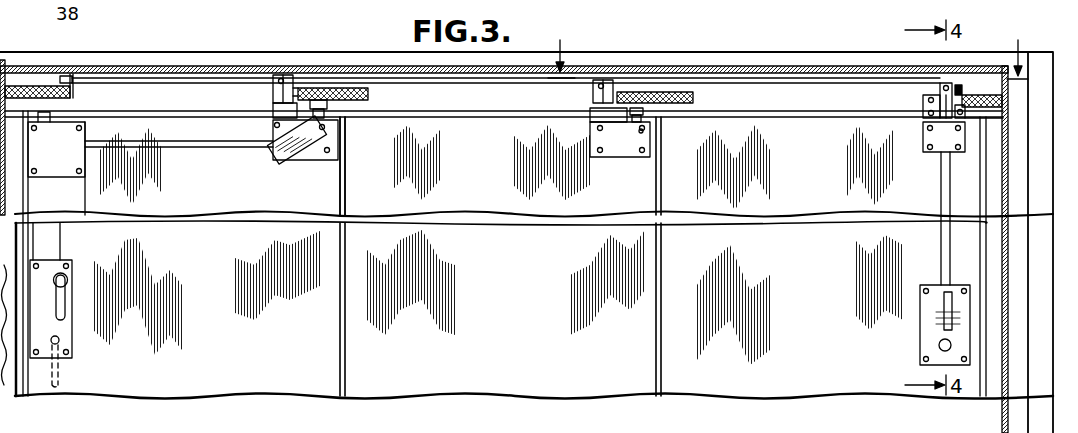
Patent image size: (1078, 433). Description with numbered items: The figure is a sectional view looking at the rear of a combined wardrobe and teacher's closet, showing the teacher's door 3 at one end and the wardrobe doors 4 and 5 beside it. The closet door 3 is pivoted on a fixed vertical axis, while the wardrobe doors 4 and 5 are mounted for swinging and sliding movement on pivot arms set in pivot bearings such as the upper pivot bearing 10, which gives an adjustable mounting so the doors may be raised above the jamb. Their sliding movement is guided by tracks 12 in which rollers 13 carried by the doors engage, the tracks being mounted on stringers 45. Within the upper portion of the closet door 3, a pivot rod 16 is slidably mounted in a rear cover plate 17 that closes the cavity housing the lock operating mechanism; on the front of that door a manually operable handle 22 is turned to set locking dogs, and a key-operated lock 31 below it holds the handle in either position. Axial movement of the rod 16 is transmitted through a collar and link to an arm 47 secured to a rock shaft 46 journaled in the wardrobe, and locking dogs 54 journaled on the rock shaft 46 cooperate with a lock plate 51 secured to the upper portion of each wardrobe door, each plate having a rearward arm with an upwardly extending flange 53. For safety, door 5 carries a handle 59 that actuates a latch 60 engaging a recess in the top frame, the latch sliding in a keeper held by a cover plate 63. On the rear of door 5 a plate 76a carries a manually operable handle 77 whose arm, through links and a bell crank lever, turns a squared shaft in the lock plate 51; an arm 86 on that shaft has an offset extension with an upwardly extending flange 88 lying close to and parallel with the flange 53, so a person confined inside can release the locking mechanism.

The teacher's door 3 is at (739, 309).
The wardrobe door 4 is at (429, 309).
The wardrobe door 5 is at (127, 309).
The upper pivot bearing 10 is at (792, 71).
The track 12 is at (337, 112).
The roller 13 is at (340, 120).
The pivot rod 16 is at (942, 243).
The rear cover plate 17 is at (925, 142).
The manually operable handle 22 is at (923, 305).
The lock 31 is at (940, 345).
The stringer 45 is at (23, 97).
The rock shaft 46 is at (755, 87).
The arm 47 is at (923, 105).
The lock plate 51 is at (335, 153).
The upwardly extending flange 53 is at (280, 125).
The locking dog 54 is at (273, 98).
The handle 59 is at (62, 375).
The latch 60 is at (50, 115).
The cover plate 63 is at (65, 167).
The plate 76a is at (62, 328).
The manually operable handle 77 is at (60, 295).
The arm 86 is at (296, 153).
The upwardly extending flange 88 is at (278, 147).